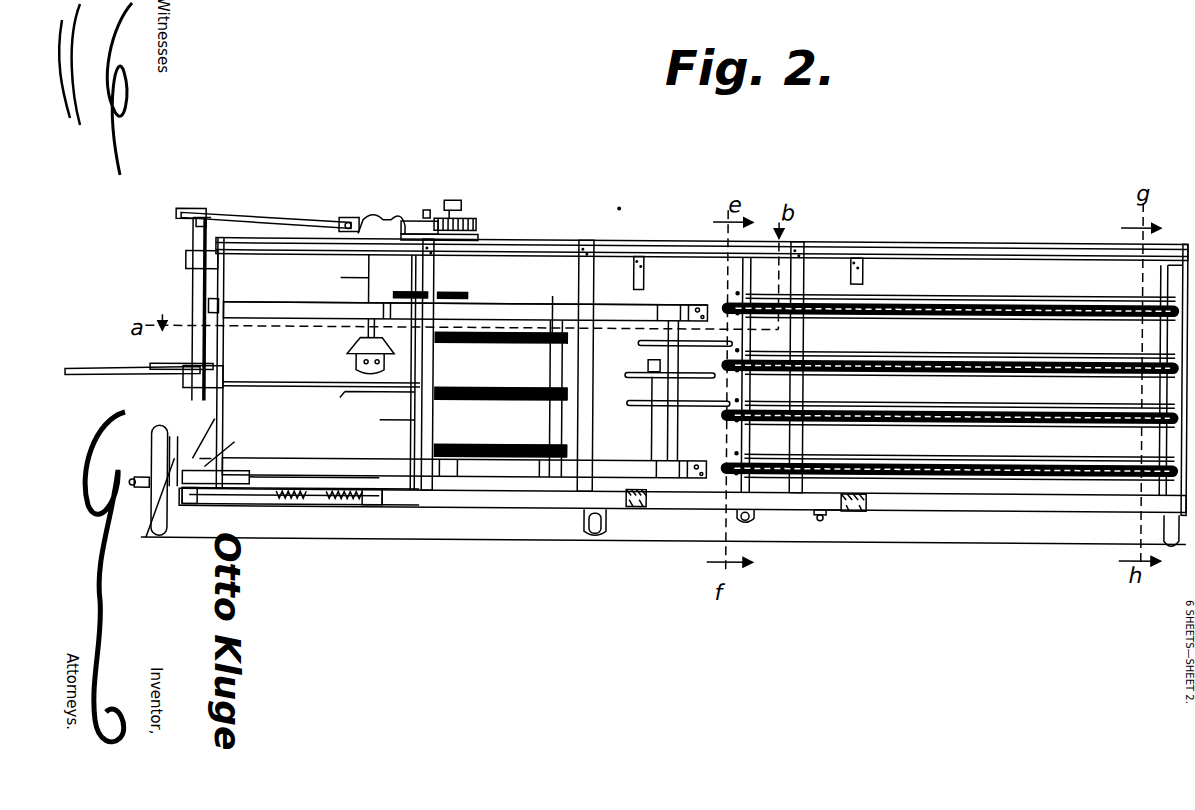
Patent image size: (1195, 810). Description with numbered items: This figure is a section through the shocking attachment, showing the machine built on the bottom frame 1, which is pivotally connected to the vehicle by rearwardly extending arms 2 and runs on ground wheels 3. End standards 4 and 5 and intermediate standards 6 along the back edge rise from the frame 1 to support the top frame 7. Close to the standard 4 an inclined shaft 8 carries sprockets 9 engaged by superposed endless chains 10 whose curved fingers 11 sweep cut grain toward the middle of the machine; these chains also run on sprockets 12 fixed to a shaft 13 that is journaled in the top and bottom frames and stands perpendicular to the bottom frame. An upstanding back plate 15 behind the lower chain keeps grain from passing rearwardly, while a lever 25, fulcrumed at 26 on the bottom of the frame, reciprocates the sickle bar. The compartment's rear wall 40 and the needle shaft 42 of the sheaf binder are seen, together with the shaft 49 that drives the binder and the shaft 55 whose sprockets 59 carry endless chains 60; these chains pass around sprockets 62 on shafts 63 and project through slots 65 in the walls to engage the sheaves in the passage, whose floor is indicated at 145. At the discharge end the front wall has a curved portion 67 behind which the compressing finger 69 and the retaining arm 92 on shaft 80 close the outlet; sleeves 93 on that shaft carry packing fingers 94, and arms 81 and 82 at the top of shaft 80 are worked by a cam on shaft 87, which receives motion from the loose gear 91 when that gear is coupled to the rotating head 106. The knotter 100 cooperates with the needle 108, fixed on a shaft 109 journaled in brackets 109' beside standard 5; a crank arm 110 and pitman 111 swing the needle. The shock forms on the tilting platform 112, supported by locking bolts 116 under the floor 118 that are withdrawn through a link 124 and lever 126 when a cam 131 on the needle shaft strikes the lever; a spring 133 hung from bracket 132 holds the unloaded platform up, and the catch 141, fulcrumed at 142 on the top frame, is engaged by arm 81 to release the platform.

The frame 1 is at (1043, 509).
The rearwardly extending arms 2 is at (638, 509).
The ground wheels 3 is at (594, 538).
The end standard 4 is at (1182, 278).
The end standard 5 is at (210, 296).
The intermediate standards 6 is at (430, 275).
The top frame 7 is at (528, 242).
The inclined shaft 8 is at (1160, 388).
The sprockets 9 is at (1153, 312).
The endless chains 10 is at (972, 313).
The curved fingers 11 is at (1053, 470).
The sprockets 12 is at (768, 465).
The shaft 13 is at (752, 380).
The back plate 15 is at (993, 487).
The lever 25 is at (832, 510).
The fulcrum 26 is at (821, 520).
The rear wall 40 is at (679, 395).
The needle shaft 42 is at (676, 364).
The shaft 49 is at (652, 432).
The shaft 55 is at (552, 372).
The sprockets 59 is at (552, 334).
The endless chains 60 is at (505, 446).
The sprockets 62 is at (466, 345).
The shafts 63 is at (455, 446).
The slots 65 is at (567, 339).
The curved portion 67 is at (273, 305).
The compressing finger 69 is at (375, 396).
The shaft 80 is at (411, 276).
The arm 81 is at (426, 236).
The arm 82 is at (410, 222).
The shaft 87 is at (368, 280).
The gear 91 is at (468, 222).
The retaining arm 92 is at (320, 390).
The sleeves 93 is at (415, 345).
The packing fingers 94 is at (380, 424).
The knotter 100 is at (350, 359).
The head 106 is at (452, 203).
The needle 108 is at (95, 368).
The needle shaft 109 is at (179, 313).
The brackets 109' is at (169, 244).
The crank arm 110 is at (198, 214).
The pitman 111 is at (258, 217).
The platform 112 is at (330, 509).
The locking bolts 116 is at (250, 512).
The floor 118 is at (305, 480).
The link 124 is at (230, 470).
The lever 126 is at (208, 450).
The cam 131 is at (215, 370).
The bracket 132 is at (168, 432).
The spring 133 is at (150, 510).
The catch 141 is at (380, 218).
The fulcrum 142 is at (345, 220).
The floor of the passage 145 is at (512, 485).